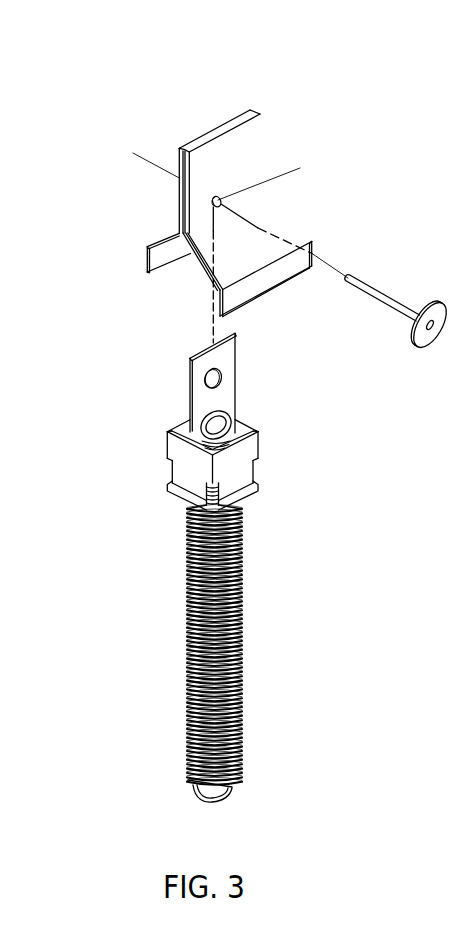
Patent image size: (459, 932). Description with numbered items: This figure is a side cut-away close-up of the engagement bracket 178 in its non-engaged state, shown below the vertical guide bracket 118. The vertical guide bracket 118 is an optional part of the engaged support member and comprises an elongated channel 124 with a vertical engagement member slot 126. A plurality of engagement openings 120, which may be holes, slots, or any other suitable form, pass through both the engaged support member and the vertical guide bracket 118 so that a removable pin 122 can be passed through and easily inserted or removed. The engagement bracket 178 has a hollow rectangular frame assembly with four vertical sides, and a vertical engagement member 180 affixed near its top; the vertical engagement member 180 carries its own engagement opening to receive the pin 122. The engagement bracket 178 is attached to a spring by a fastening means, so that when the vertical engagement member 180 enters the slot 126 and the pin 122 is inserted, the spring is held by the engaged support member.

The vertical guide bracket 118 is at (182, 111).
The engagement opening 120 is at (218, 198).
The removable pin 122 is at (390, 291).
The elongated channel 124 is at (173, 278).
The vertical engagement member slot 126 is at (162, 209).
The engagement bracket 178 is at (284, 436).
The vertical engagement member 180 is at (193, 370).